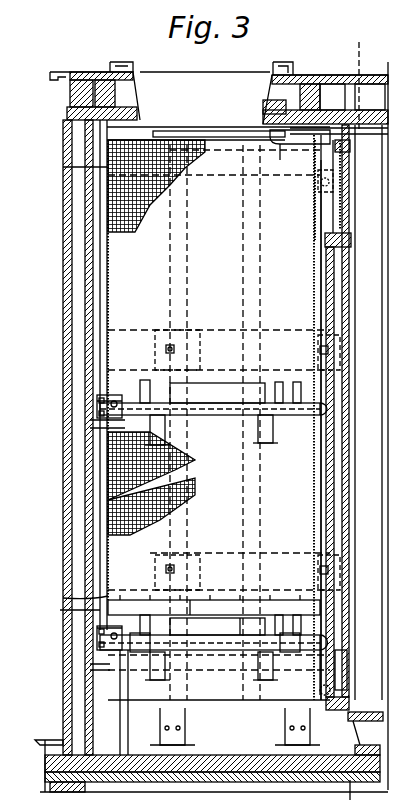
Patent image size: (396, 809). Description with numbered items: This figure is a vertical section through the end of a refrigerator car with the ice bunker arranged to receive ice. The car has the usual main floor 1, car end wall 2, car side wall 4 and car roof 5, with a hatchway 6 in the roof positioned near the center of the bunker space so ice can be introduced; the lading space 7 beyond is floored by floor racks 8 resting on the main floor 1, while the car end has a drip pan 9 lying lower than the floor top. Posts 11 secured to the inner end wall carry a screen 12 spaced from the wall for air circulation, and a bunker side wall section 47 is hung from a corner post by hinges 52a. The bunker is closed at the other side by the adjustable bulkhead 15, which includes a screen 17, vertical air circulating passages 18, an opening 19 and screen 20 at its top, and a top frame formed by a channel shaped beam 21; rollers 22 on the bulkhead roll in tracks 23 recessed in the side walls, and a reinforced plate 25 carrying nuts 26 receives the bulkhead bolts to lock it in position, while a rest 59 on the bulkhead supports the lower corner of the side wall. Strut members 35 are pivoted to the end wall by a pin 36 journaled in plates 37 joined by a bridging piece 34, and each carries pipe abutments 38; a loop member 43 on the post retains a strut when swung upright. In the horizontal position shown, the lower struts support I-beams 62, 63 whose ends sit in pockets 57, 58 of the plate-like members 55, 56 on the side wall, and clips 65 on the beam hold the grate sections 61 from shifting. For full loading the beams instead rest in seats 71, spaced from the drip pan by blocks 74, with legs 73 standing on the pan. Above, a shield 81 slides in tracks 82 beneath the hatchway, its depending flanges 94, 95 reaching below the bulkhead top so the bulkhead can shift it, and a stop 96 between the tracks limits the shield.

The main floor 1 is at (340, 48).
The car end wall 2 is at (75, 492).
The car side wall 4 is at (364, 412).
The car roof 5 is at (370, 84).
The hatchway 6 is at (250, 72).
The lading space 7 is at (245, 674).
The floor racks 8 is at (372, 712).
The drip pan 9 is at (215, 755).
The posts 11 is at (97, 330).
The screen 12 is at (110, 295).
The adjustable bulkhead 15 is at (350, 482).
The screen 17 is at (314, 497).
The air circulating passages 18 is at (314, 278).
The opening 19 is at (337, 207).
The screen 20 is at (345, 233).
The channel shaped beam 21 is at (320, 160).
The rollers 22 is at (334, 182).
The tracks 23 is at (215, 205).
The reinforced plate 25 is at (205, 330).
The nuts 26 is at (166, 349).
The bridging piece 34 is at (118, 428).
The strut member 35 is at (210, 416).
The pin 36 is at (113, 395).
The plates 37 is at (97, 405).
The abutments 38 is at (165, 440).
The loop member 43 is at (125, 210).
The side wall section 47 is at (145, 140).
The hinges 52a is at (63, 167).
The upper plate-like member 55 is at (214, 383).
The lower plate-like member 56 is at (200, 618).
The seat 57 is at (150, 390).
The seat 58 is at (279, 382).
The rest 59 is at (340, 660).
The grate sections 61 is at (220, 600).
The I-beam 62 is at (133, 594).
The I-beam 63 is at (262, 615).
The clips 65 is at (65, 610).
The seat 71 is at (195, 722).
The legs 73 is at (140, 652).
The block 74 is at (160, 746).
The shield 81 is at (372, 134).
The tracks 82 is at (200, 131).
The depending flange 94 is at (325, 124).
The depending flange 95 is at (366, 124).
The stop 96 is at (280, 144).